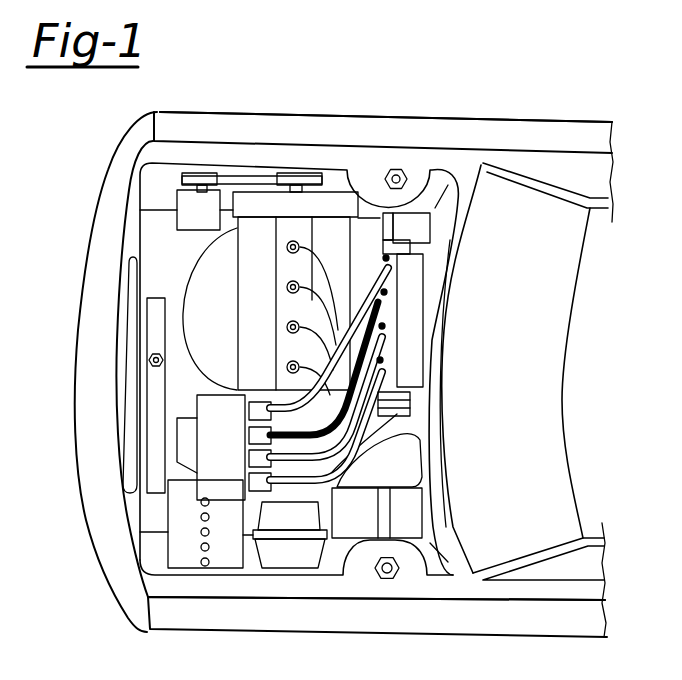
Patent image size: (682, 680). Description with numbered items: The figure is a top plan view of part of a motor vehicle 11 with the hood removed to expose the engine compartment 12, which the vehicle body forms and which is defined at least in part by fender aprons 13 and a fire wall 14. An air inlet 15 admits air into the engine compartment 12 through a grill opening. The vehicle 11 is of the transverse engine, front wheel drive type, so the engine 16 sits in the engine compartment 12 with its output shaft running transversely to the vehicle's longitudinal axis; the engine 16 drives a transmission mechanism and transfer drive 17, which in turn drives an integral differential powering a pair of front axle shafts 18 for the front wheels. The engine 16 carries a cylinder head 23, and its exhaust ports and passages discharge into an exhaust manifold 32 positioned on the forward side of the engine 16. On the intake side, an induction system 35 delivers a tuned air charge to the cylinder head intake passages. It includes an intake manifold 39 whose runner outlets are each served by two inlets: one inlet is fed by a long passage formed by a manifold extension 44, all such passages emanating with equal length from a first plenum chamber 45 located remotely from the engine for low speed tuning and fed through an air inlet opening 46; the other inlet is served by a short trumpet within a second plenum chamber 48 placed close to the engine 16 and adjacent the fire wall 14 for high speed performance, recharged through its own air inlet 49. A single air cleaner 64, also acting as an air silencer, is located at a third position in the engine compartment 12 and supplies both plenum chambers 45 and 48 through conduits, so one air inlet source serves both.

The motor vehicle 11 is at (175, 640).
The engine compartment 12 is at (153, 230).
The fender aprons 13 is at (247, 152).
The fire wall 14 is at (440, 240).
The air inlet 15 is at (118, 372).
The engine 16 is at (340, 185).
The transmission mechanism and transfer drive 17 is at (407, 462).
The front axle shafts 18 is at (392, 228).
The cylinder head 23 is at (260, 216).
The exhaust manifold 32 is at (208, 257).
The induction system 35 is at (362, 252).
The intake manifold 39 is at (382, 323).
The manifold extension 44 is at (330, 457).
The first plenum chamber 45 is at (197, 490).
The air inlet opening 46 is at (188, 433).
The second plenum chamber 48 is at (410, 343).
The air inlet 49 is at (405, 398).
The air cleaner 64 is at (283, 560).